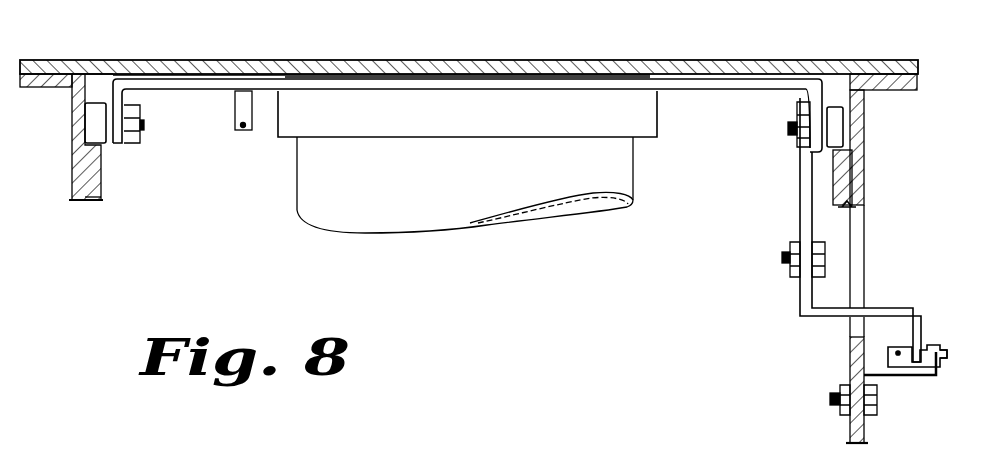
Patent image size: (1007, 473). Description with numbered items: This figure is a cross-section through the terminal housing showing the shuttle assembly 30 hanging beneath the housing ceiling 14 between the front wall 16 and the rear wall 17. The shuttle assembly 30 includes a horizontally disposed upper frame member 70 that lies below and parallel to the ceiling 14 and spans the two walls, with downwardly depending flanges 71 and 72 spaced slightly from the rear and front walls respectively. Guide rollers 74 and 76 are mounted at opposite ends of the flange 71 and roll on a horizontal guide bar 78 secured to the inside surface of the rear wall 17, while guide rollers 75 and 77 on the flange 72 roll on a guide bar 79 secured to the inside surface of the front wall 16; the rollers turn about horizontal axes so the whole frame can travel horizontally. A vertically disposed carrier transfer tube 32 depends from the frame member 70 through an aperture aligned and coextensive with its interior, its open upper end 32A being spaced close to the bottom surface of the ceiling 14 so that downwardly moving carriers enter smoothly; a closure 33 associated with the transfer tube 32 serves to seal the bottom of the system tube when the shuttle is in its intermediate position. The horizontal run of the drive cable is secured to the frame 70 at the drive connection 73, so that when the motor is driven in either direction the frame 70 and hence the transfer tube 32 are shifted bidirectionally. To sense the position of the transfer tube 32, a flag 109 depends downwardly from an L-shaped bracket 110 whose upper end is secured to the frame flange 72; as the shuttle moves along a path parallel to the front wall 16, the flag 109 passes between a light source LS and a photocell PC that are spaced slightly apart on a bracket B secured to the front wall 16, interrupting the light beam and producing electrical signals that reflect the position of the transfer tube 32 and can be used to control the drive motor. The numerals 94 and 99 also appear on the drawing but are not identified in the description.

The housing ceiling 14 is at (712, 70).
The front wall 16 is at (848, 447).
The rear wall 17 is at (70, 202).
The shuttle assembly 30 is at (477, 141).
The carrier transfer tube 32 is at (312, 203).
The upper end of transfer tube 32A is at (622, 146).
The closure 33 is at (531, 77).
The upper frame member 70 is at (680, 92).
The flange 71 is at (124, 146).
The flange 72 is at (817, 153).
The drive connection 73 is at (238, 130).
The guide roller 74 is at (95, 103).
The guide roller 75 is at (843, 107).
The guide roller 76 is at (103, 67).
The guide roller 77 is at (843, 77).
The guide bar 78 is at (92, 203).
The guide bar 79 is at (842, 209).
The lower member 94 is at (662, 471).
The lower member 99 is at (522, 463).
The flag 109 is at (913, 352).
The L-shaped bracket 110 is at (798, 314).
The light source LS is at (898, 351).
The photocell PC is at (934, 359).
The bracket B is at (908, 378).